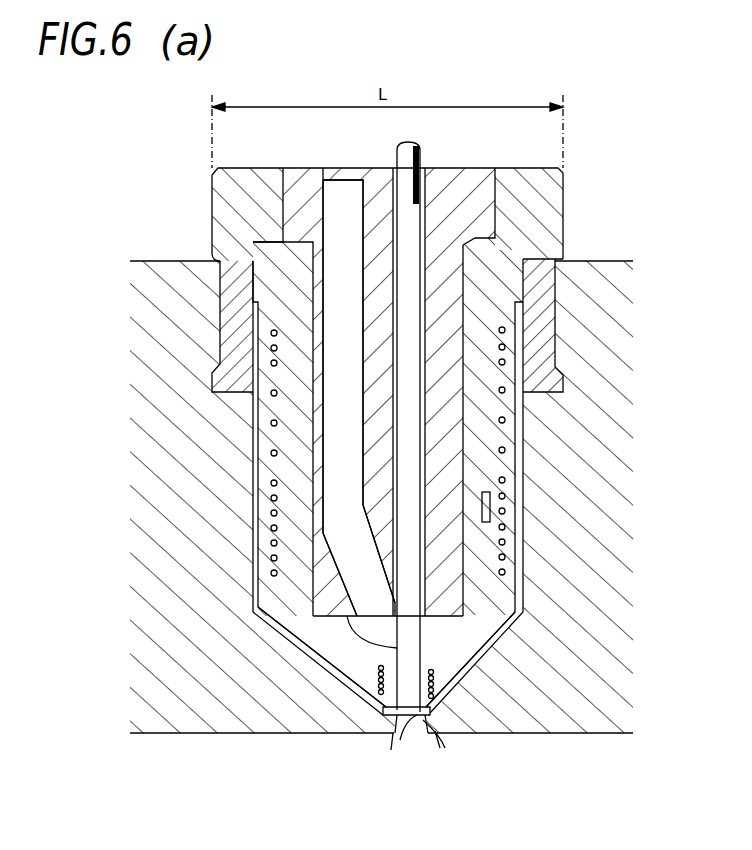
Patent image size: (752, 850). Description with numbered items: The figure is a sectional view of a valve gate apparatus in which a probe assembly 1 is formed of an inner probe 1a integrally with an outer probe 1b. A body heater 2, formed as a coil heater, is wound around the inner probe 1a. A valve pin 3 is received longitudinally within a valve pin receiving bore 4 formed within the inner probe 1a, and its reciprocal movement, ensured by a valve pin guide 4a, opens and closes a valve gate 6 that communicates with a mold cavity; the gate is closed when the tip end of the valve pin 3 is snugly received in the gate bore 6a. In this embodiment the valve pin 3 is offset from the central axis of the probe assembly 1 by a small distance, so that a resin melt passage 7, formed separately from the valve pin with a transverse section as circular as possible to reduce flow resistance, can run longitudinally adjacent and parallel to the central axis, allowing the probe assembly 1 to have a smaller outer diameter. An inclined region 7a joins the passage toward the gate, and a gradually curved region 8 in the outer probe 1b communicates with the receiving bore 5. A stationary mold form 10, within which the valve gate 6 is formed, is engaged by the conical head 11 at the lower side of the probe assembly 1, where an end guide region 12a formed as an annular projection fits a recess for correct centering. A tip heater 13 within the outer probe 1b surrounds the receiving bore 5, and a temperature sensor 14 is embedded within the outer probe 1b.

The probe assembly 1 is at (439, 280).
The inner probe 1a is at (480, 203).
The outer probe 1b is at (542, 237).
The body heater 2 is at (522, 445).
The valve pin 3 is at (418, 158).
The valve pin receiving bore 4 is at (397, 220).
The valve pin guide 4a is at (395, 500).
The receiving bore 5 is at (395, 700).
The valve gate 6 is at (432, 720).
The gate bore 6a is at (400, 723).
The resin melt passage 7 is at (335, 235).
The inclined region 7a is at (357, 572).
The gradually curved region 8 is at (380, 688).
The stationary mold form 10 is at (585, 715).
The conical head 11 is at (483, 650).
The end guide region 12a is at (433, 712).
The tip heater 13 is at (445, 705).
The temperature sensor 14 is at (490, 500).